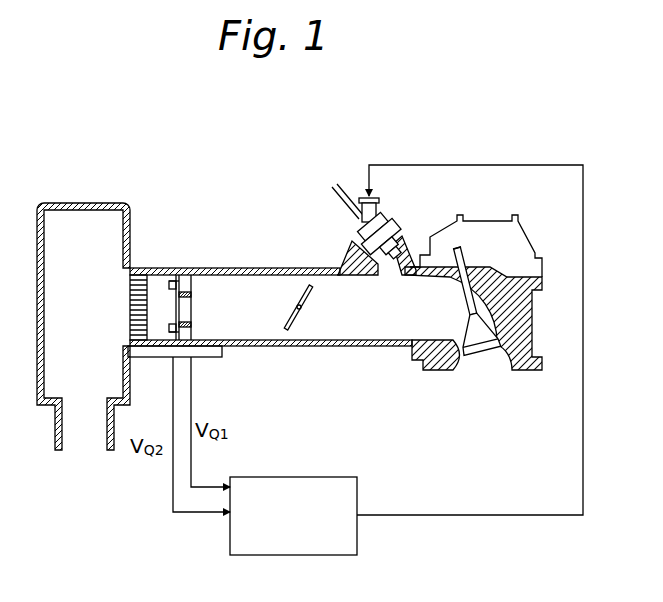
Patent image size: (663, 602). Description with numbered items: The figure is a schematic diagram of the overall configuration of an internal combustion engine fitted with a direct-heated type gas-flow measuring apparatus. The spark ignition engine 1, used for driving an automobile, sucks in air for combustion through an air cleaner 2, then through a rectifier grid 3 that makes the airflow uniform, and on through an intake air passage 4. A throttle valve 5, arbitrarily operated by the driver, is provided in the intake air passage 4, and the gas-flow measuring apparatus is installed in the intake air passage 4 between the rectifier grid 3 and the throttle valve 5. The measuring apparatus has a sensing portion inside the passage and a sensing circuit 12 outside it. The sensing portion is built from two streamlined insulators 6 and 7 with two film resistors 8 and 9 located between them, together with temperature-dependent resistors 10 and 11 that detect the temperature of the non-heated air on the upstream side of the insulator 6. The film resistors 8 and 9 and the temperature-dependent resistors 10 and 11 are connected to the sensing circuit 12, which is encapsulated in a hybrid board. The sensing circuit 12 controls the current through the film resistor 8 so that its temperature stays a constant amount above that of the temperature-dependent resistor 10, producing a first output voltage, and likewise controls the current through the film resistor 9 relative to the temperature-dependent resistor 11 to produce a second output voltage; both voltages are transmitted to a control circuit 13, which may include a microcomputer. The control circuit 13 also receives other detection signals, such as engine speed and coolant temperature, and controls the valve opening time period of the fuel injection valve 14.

The spark ignition engine 1 is at (532, 333).
The air cleaner 2 is at (85, 203).
The rectifier grid 3 is at (152, 276).
The intake air passage 4 is at (268, 343).
The throttle valve 5 is at (311, 288).
The streamlined insulator 6 is at (176, 311).
The streamlined insulator 7 is at (192, 305).
The film resistor 8 is at (191, 292).
The film resistor 9 is at (192, 326).
The temperature-dependent resistor 10 is at (172, 281).
The temperature-dependent resistor 11 is at (170, 333).
The sensing circuit 12 is at (218, 356).
The control circuit 13 is at (357, 477).
The fuel injection valve 14 is at (378, 210).